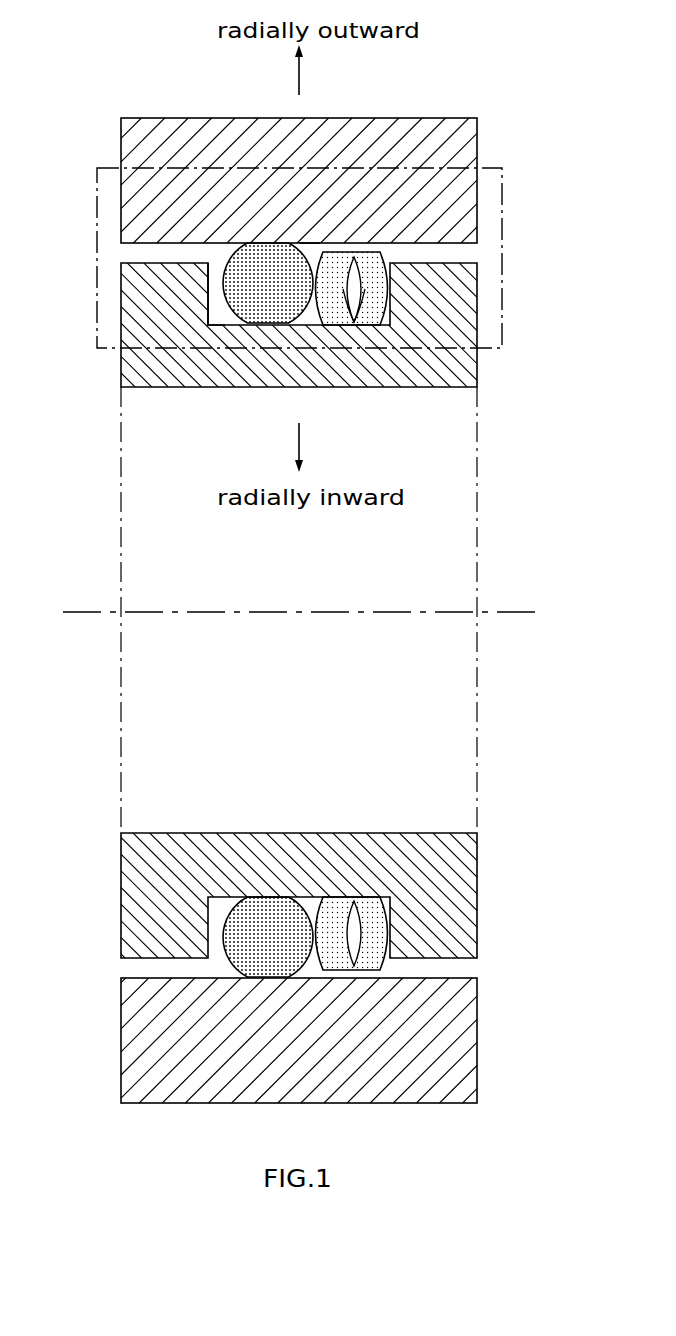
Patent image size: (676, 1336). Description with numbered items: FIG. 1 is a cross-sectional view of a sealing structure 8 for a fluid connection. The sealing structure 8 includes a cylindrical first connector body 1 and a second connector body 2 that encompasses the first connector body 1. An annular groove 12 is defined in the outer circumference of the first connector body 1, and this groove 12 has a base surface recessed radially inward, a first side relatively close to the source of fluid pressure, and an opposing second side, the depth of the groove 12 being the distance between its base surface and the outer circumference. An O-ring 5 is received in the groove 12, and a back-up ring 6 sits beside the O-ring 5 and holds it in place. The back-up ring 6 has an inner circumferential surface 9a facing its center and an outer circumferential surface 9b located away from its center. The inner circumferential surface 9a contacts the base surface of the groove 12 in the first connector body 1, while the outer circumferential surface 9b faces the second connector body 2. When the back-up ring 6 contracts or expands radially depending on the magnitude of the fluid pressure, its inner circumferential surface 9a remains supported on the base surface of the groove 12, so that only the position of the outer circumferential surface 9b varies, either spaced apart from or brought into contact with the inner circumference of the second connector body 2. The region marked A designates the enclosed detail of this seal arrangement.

The first connector body 1 is at (460, 305).
The second connector body 2 is at (460, 186).
The O-ring 5 is at (267, 310).
The back-up ring 6 is at (375, 325).
The sealing structure 8 is at (313, 234).
The inner circumferential surface 9a is at (352, 325).
The outer circumferential surface 9b is at (365, 254).
The groove 12 is at (220, 312).
The bearing section A is at (506, 254).